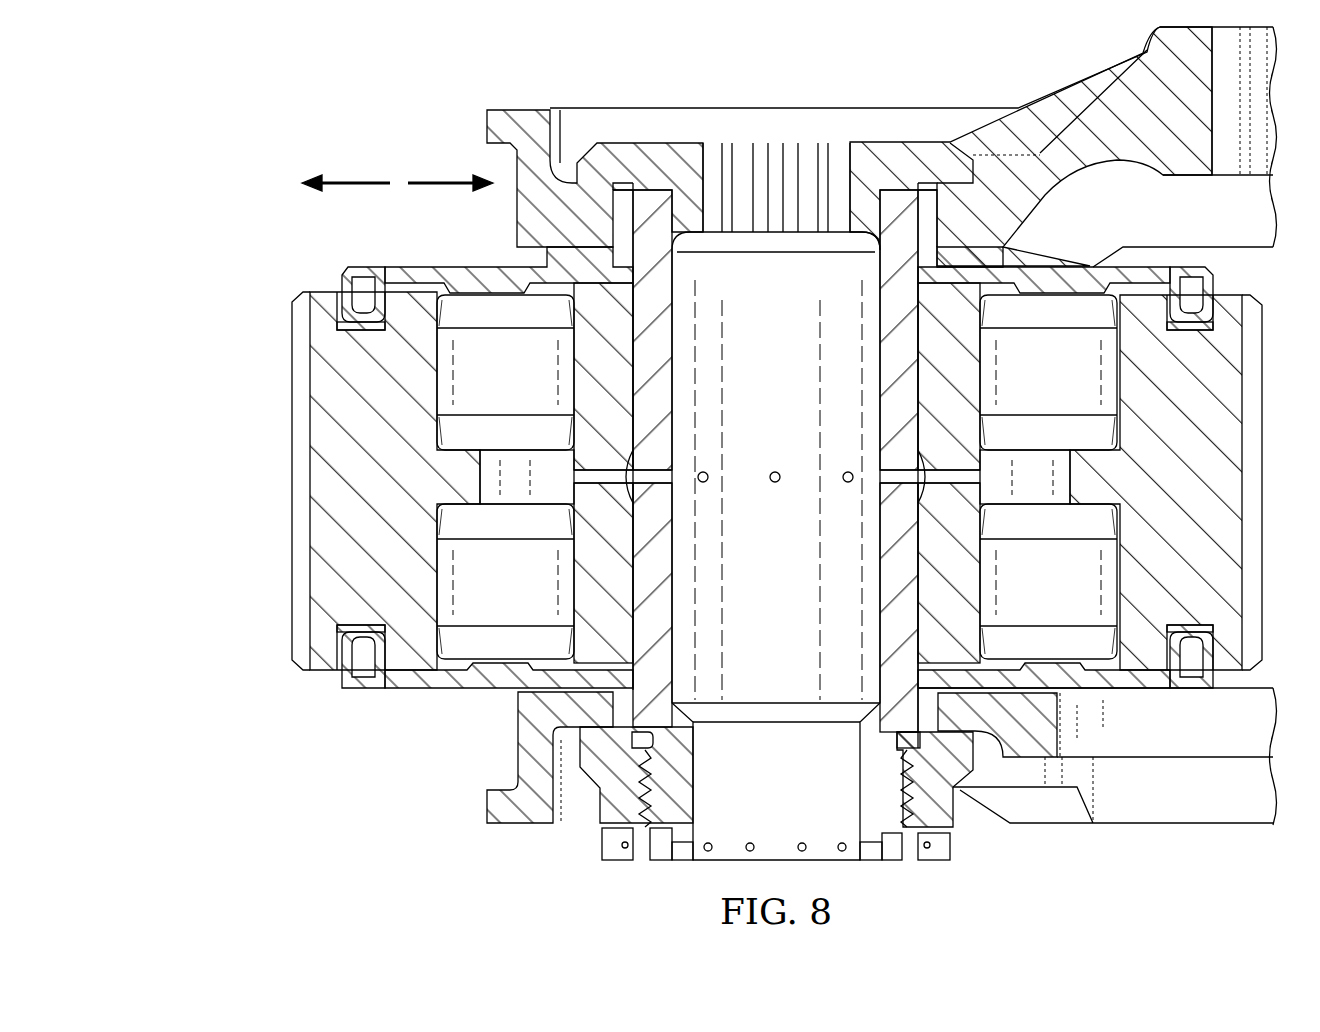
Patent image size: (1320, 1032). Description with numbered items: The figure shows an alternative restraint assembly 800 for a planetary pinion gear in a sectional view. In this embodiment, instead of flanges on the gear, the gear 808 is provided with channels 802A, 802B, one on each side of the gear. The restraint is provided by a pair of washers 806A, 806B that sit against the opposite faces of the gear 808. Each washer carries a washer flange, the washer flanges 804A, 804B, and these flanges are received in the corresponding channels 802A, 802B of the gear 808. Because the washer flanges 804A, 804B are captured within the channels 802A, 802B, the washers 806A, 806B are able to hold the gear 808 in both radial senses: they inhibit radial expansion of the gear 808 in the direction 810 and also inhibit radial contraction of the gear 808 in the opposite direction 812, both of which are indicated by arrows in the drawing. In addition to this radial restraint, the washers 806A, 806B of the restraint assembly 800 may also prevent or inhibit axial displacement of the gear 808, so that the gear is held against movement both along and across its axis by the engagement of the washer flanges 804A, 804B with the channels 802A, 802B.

The restraint assembly 800 is at (186, 266).
The channel 802A is at (363, 327).
The channel 802B is at (357, 627).
The washer flange 804A is at (357, 303).
The washer flange 804B is at (343, 648).
The washer 806A is at (452, 265).
The washer 806B is at (398, 690).
The gear 808 is at (292, 474).
The direction 810 is at (360, 180).
The direction 812 is at (440, 180).